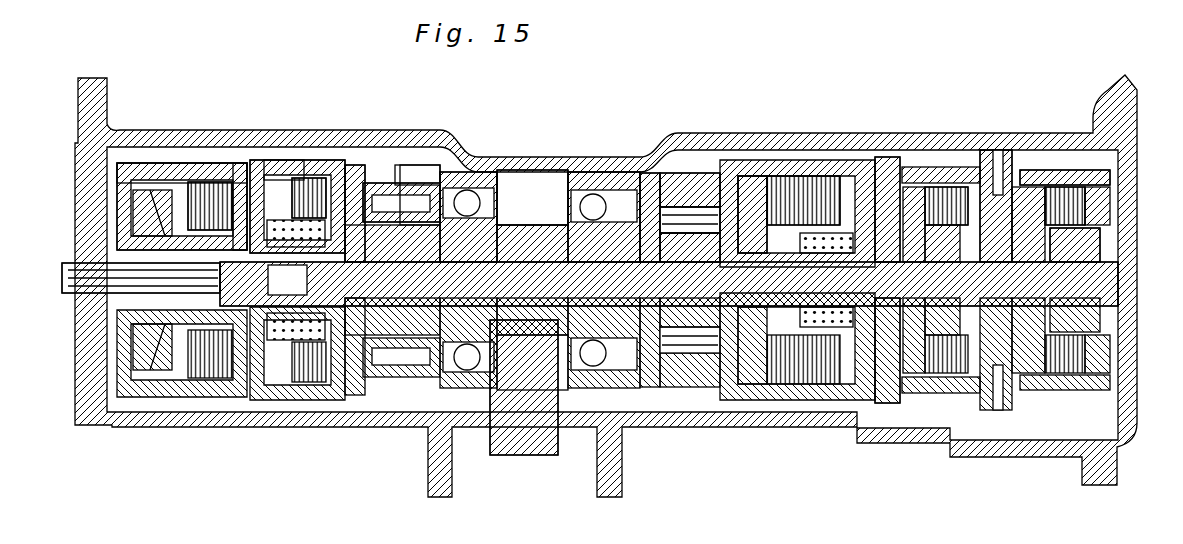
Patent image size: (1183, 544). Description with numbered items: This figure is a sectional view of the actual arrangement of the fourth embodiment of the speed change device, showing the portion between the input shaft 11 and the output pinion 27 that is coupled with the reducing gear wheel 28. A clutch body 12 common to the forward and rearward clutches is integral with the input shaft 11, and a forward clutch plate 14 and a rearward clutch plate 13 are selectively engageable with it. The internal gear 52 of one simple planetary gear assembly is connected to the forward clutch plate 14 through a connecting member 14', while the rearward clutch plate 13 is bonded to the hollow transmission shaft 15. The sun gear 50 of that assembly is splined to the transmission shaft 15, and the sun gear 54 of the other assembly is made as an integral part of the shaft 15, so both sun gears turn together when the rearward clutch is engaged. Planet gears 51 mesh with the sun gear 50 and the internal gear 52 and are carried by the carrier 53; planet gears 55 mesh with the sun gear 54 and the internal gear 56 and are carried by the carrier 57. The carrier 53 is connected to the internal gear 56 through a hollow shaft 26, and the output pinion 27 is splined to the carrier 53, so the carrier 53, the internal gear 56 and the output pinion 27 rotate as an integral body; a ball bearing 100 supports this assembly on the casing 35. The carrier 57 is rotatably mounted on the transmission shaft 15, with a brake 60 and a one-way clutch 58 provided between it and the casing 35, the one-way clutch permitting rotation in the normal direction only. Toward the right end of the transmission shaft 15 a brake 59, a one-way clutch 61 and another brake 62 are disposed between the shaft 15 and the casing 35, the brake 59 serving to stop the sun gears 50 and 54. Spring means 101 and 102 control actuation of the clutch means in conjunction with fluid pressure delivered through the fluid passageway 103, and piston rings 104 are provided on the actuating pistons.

The input shaft 11 is at (100, 277).
The clutch body 12 is at (298, 165).
The rearward clutch plate 13 is at (322, 175).
The forward clutch plate 14 is at (211, 156).
The connecting member 14' is at (297, 168).
The transmission shaft 15 is at (393, 292).
The hollow shaft 26 is at (555, 255).
The output pinion 27 is at (530, 213).
The gear wheel 28 is at (522, 442).
The casing 35 is at (1015, 150).
The sun gear 50 is at (383, 200).
The planet gears 51 is at (405, 200).
The internal gear 52 is at (440, 200).
The carrier 53 is at (430, 172).
The sun gear 54 is at (648, 190).
The planet gears 55 is at (687, 187).
The internal gear 56 is at (728, 192).
The carrier 57 is at (735, 220).
The one-way clutch 58 is at (778, 235).
The brake 59 is at (942, 173).
The brake 60 is at (832, 170).
The one-way clutch 61 is at (1087, 268).
The brake 62 is at (1075, 177).
The ball bearing 100 is at (482, 180).
The spring means 101 is at (882, 172).
The spring means 102 is at (167, 180).
The fluid passageway 103 is at (238, 180).
The piston rings 104 is at (143, 180).